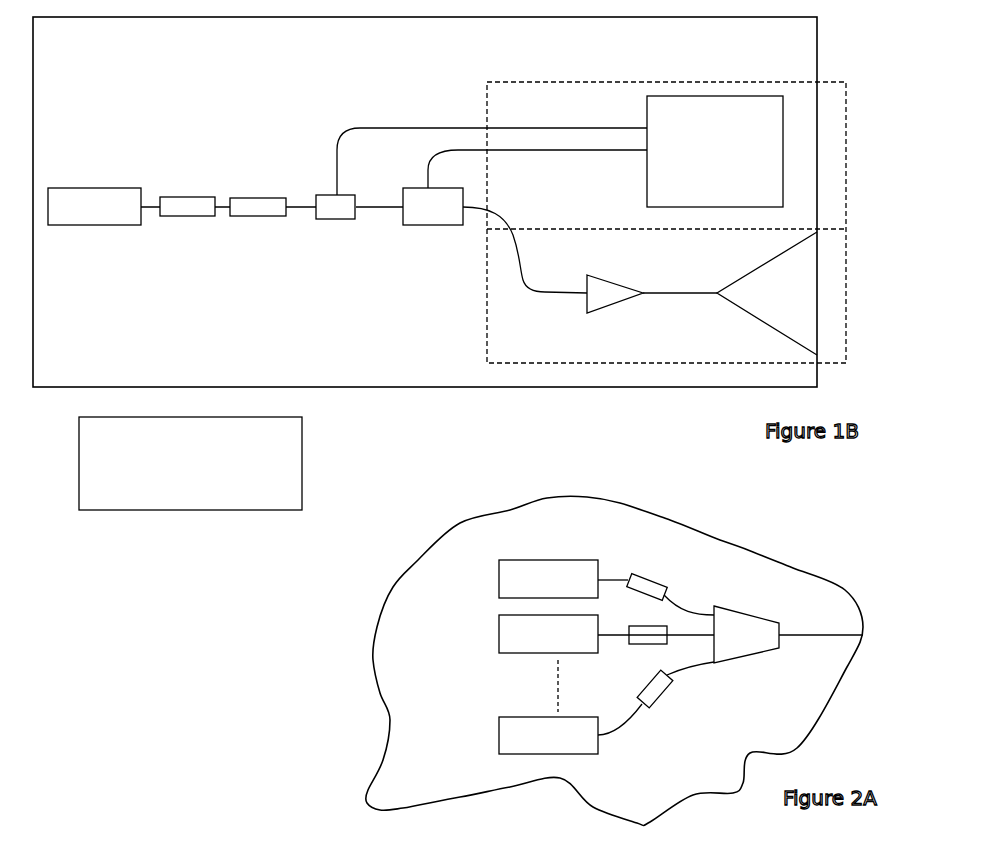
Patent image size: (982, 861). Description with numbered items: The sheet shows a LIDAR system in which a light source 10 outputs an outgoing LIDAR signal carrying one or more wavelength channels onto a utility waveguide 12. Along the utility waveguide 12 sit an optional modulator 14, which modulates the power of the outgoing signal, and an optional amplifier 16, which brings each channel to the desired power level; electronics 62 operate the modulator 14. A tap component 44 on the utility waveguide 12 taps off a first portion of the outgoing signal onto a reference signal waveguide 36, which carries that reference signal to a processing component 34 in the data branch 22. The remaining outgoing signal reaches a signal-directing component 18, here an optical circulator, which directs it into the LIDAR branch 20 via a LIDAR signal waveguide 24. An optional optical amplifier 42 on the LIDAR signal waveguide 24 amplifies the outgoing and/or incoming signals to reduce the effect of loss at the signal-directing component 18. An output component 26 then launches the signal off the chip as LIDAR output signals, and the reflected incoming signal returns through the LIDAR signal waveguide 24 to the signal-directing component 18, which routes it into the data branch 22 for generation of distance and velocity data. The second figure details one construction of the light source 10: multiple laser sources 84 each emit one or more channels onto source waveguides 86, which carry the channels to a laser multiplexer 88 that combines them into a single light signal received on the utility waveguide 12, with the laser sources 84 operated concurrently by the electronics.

In FIG. 1B, the light source 10 is at (97, 188).
In FIG. 2A, the light source 10 is at (697, 557).
In FIG. 1B, the utility waveguide 12 is at (300, 207).
In FIG. 2A, the utility waveguide 12 is at (847, 605).
In FIG. 1B, the modulator 14 is at (172, 216).
In FIG. 2A, the modulator 14 is at (655, 578).
In FIG. 1B, the amplifier 16 is at (243, 198).
In FIG. 1B, the signal-directing component 18 is at (423, 225).
In FIG. 1B, the LIDAR branch 20 is at (846, 257).
In FIG. 1B, the data branch 22 is at (830, 82).
In FIG. 1B, the LIDAR signal waveguide 24 is at (540, 292).
In FIG. 1B, the output component 26 is at (730, 307).
In FIG. 1B, the processing component 34 is at (747, 96).
In FIG. 1B, the reference signal waveguide 36 is at (419, 127).
In FIG. 1B, the optical amplifier 42 is at (612, 275).
In FIG. 1B, the tap component 44 is at (327, 195).
In FIG. 1B, the electronics 62 is at (79, 445).
In FIG. 2A, the laser sources 84 is at (548, 560).
In FIG. 2A, the source waveguides 86 is at (623, 637).
In FIG. 2A, the laser multiplexer 88 is at (737, 606).